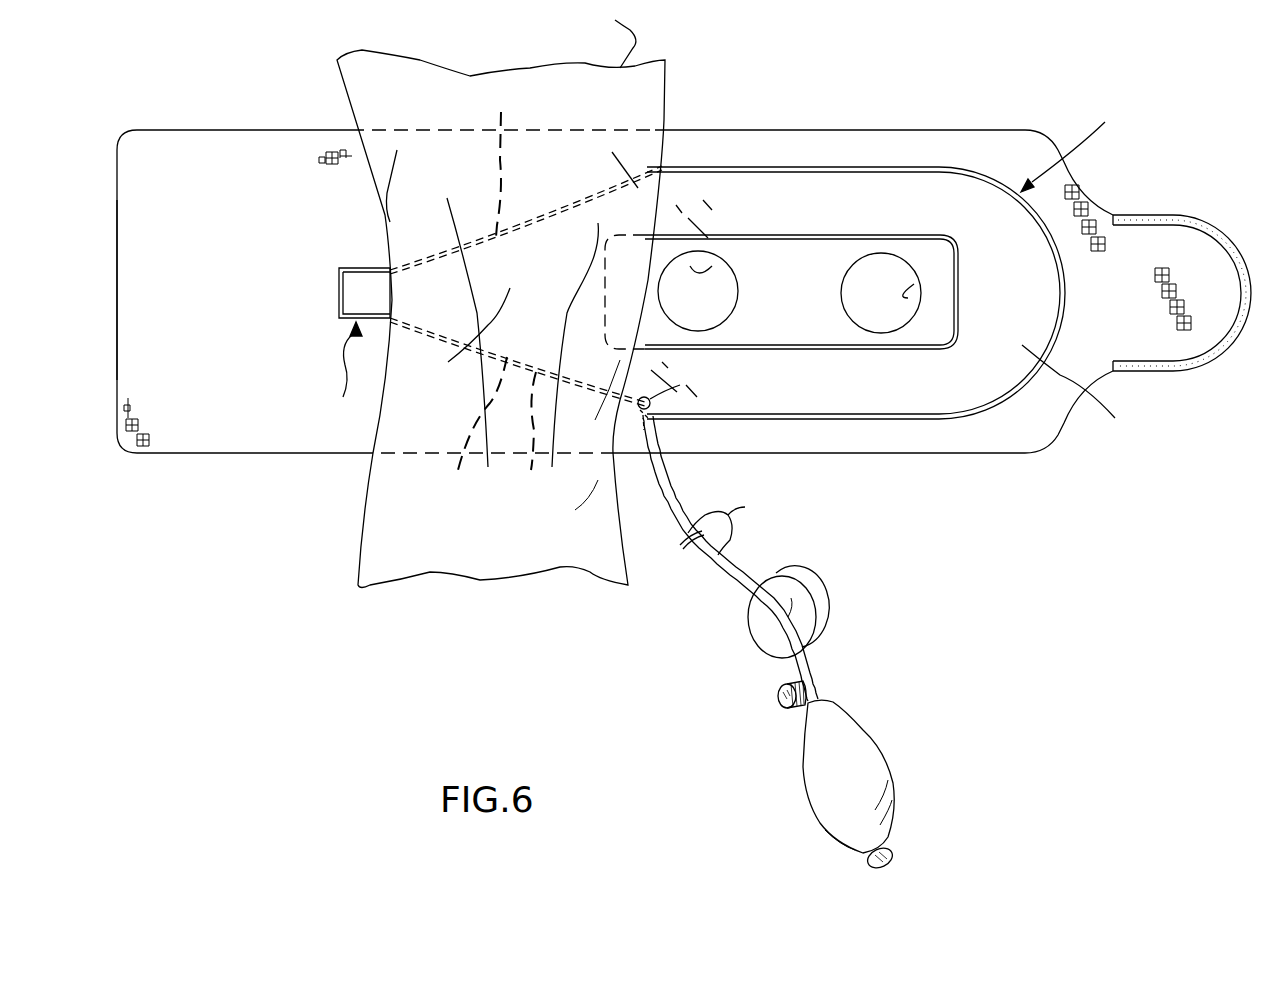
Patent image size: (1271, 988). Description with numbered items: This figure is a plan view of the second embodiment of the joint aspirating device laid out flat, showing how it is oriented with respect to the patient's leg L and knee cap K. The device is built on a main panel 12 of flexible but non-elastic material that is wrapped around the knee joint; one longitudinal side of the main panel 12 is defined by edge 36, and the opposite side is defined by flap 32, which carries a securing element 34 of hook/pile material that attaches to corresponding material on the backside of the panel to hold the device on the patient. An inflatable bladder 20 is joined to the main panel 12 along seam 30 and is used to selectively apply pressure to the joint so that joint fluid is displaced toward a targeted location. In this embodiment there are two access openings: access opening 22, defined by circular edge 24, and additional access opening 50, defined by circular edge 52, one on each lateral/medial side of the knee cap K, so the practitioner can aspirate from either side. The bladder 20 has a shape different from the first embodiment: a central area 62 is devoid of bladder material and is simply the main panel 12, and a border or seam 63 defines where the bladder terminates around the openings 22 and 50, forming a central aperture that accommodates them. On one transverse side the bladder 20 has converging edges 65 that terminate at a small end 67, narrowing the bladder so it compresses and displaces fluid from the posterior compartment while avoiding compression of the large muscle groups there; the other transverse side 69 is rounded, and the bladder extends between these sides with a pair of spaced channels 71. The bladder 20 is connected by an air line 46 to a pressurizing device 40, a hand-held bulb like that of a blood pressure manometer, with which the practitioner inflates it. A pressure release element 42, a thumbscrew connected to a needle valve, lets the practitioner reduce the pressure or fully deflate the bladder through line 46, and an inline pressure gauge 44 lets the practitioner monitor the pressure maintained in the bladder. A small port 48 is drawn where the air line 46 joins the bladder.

The main panel 12 is at (244, 303).
The bladder 20 is at (734, 303).
The access opening 22 is at (890, 312).
The circular edge 24 is at (908, 298).
The seam 30 is at (960, 165).
The flap 32 is at (1160, 242).
The securing element 34 is at (1241, 275).
The edge 36 is at (115, 328).
The pressurizing device 40 is at (877, 750).
The pressure release element 42 is at (780, 703).
The inline pressure gauge 44 is at (826, 612).
The air line 46 is at (745, 507).
The port 48 is at (660, 395).
The additional access opening 50 is at (718, 300).
The circular edge 52 is at (708, 274).
The central area 62 is at (802, 293).
The seam 63 is at (880, 237).
The converging edges 65 is at (526, 296).
The small end 67 is at (339, 298).
The transverse side 69 is at (1115, 418).
The spaced channels 71 is at (718, 190).
The knee cap K is at (470, 333).
The leg L is at (622, 95).